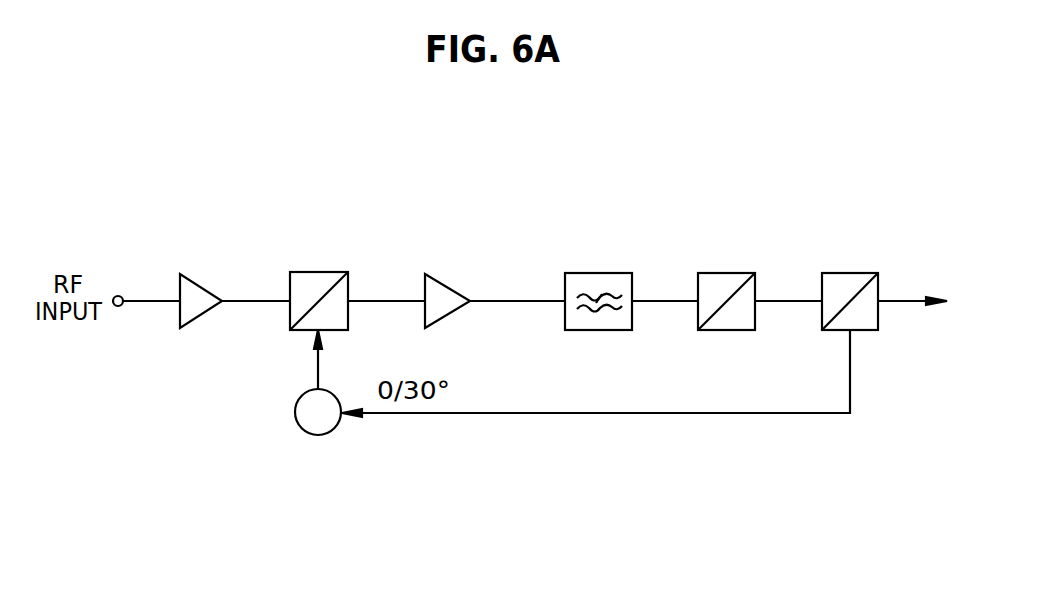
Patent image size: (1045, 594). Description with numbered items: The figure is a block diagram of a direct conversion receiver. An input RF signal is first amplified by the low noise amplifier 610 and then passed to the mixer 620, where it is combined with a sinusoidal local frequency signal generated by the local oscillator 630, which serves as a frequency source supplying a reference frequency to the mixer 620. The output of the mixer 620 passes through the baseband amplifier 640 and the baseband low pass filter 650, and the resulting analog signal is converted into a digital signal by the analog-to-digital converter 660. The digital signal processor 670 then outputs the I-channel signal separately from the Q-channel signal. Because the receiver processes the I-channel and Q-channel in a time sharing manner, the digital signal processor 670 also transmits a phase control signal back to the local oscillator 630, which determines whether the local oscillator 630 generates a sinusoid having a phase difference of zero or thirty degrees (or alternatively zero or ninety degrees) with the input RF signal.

The low noise amplifier 610 is at (203, 289).
The mixer 620 is at (318, 272).
The local oscillator 630 is at (318, 436).
The baseband amplifier 640 is at (449, 288).
The baseband low pass filter 650 is at (600, 273).
The analog-to-digital converter 660 is at (727, 273).
The digital signal processor 670 is at (851, 273).